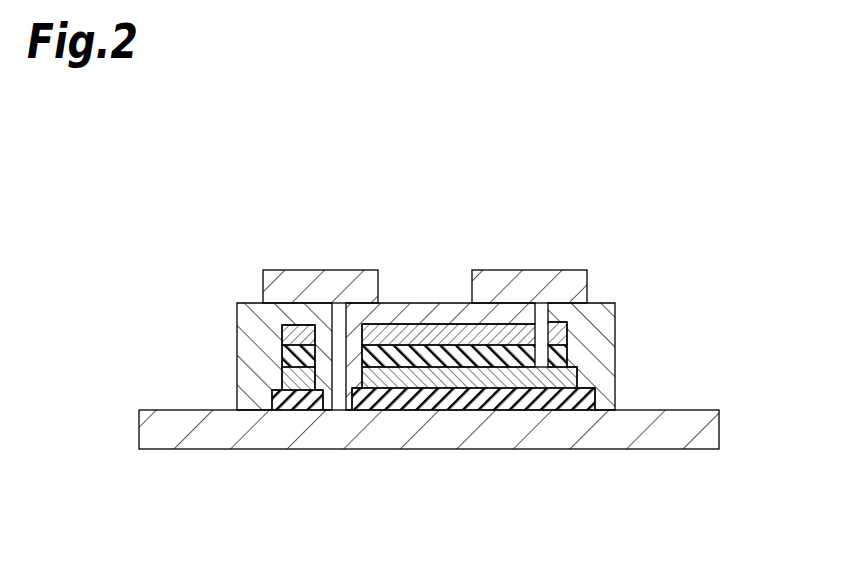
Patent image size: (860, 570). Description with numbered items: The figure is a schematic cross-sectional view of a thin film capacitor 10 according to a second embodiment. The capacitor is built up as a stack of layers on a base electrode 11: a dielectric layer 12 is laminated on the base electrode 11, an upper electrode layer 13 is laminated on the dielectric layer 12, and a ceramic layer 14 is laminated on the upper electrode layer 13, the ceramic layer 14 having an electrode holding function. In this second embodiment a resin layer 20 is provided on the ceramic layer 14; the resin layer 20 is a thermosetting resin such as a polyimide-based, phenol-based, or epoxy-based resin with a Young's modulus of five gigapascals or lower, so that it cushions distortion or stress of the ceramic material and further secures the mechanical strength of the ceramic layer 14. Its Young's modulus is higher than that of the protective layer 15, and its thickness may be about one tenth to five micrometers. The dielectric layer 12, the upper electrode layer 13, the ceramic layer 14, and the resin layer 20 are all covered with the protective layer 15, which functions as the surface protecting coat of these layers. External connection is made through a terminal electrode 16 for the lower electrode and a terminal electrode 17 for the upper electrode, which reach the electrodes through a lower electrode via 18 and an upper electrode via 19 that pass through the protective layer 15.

The thin film capacitor 10 is at (457, 170).
The base electrode 11 is at (385, 437).
The dielectric layer 12 is at (595, 400).
The upper electrode layer 13 is at (578, 380).
The ceramic layer 14 is at (440, 352).
The protective layer 15 is at (413, 305).
The terminal electrode for a lower electrode 16 is at (295, 287).
The terminal electrode for an upper electrode 17 is at (557, 285).
The lower electrode via 18 is at (335, 337).
The upper electrode via 19 is at (565, 332).
The resin layer 20 is at (550, 322).